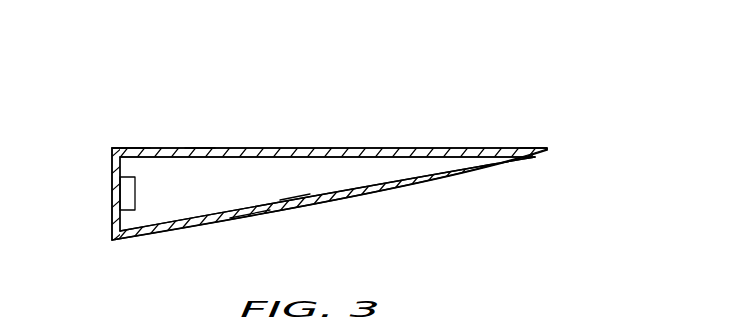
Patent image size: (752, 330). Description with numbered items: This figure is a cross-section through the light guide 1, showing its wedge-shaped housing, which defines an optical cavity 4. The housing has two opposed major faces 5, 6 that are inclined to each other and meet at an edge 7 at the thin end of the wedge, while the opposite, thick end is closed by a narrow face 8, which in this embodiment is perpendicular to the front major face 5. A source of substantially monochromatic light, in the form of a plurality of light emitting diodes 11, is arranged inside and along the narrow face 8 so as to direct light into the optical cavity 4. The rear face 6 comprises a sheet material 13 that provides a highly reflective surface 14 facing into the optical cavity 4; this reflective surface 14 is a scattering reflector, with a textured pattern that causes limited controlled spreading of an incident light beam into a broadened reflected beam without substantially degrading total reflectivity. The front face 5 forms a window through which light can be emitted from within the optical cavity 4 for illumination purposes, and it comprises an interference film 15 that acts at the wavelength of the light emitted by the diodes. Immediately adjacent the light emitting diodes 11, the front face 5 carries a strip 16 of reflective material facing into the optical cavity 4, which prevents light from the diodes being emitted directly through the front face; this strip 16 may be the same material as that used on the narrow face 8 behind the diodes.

The light guide 1 is at (462, 103).
The optical cavity 4 is at (183, 198).
The major face 5 is at (345, 149).
The major face 6 is at (455, 178).
The edge 7 is at (548, 148).
The narrow face 8 is at (119, 179).
The light emitting diodes 11 is at (122, 192).
The sheet material 13 is at (250, 217).
The reflective surface 14 is at (293, 186).
The interference film 15 is at (197, 149).
The strip of reflective material 16 is at (140, 149).